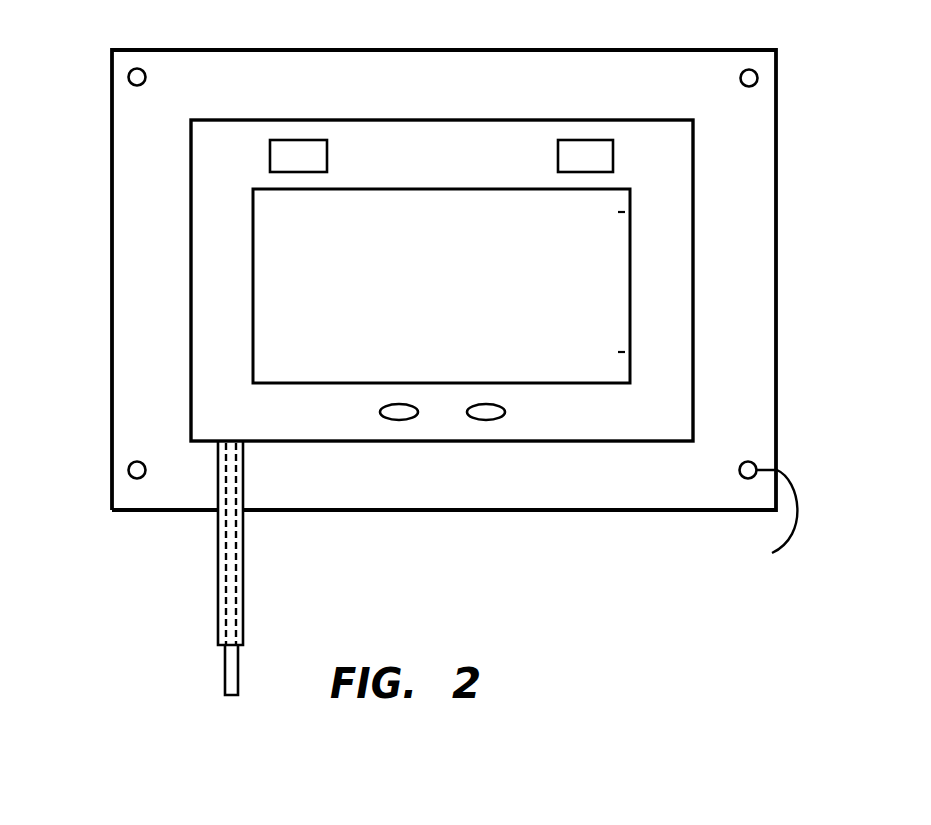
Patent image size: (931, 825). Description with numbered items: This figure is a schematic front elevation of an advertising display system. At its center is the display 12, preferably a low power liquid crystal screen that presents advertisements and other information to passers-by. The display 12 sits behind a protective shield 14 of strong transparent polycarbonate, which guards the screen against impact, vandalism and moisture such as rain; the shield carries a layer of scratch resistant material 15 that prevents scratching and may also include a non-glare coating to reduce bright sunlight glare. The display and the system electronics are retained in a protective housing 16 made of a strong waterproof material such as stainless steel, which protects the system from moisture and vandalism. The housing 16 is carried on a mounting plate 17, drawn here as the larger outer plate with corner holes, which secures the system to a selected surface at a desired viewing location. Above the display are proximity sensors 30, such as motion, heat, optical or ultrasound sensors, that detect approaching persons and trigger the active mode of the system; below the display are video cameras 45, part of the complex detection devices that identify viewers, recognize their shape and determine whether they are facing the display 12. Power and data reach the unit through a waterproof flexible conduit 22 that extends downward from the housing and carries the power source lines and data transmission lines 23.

The display 12 is at (460, 303).
The protective shield 14 is at (618, 212).
The scratch resistant material 15 is at (618, 352).
The protective housing 16 is at (178, 243).
The mounting plate 17 is at (292, 490).
The flexible conduit 22 is at (218, 571).
The data transmission lines 23 is at (242, 677).
The proximity sensors 30 is at (301, 152).
The video cameras 45 is at (399, 421).